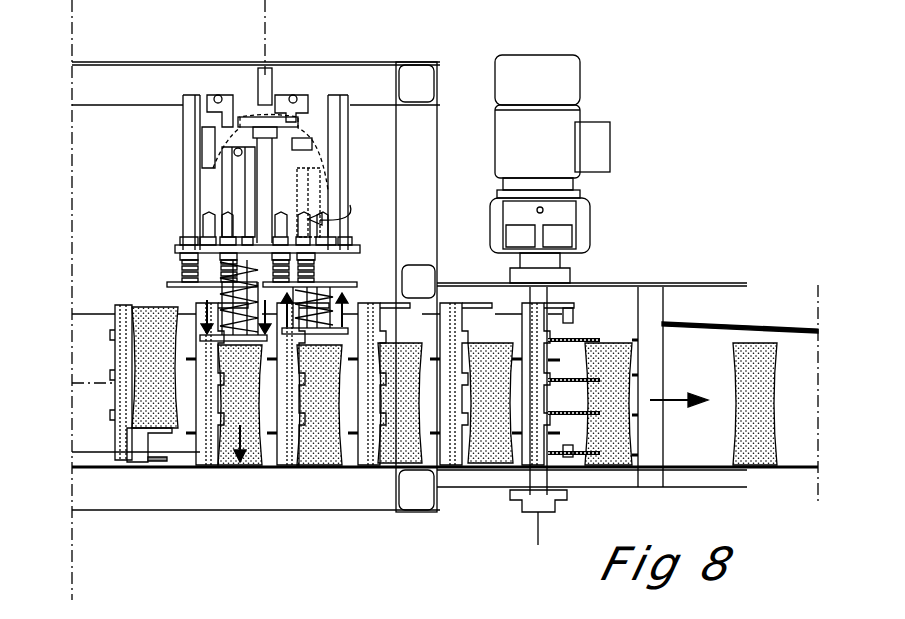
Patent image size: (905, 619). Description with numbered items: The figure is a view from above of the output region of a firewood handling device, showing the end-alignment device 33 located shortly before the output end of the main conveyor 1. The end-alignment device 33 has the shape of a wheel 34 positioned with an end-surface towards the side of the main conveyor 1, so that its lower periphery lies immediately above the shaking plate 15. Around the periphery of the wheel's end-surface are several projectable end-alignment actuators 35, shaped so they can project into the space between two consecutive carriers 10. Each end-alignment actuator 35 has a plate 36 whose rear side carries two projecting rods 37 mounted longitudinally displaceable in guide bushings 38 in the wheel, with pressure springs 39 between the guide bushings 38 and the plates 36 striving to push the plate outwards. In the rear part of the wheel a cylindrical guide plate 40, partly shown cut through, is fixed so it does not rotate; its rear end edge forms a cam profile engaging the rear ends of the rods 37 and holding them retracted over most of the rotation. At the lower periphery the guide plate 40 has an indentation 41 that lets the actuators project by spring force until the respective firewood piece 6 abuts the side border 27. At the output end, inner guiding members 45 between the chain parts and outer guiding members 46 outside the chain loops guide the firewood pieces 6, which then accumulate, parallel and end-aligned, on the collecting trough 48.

The main conveyor 1 is at (90, 505).
The firewood piece 6 is at (160, 413).
The carrier 10 is at (122, 440).
The shaking plate 15 is at (82, 337).
The side border 27 is at (205, 460).
The end-alignment device 33 is at (240, 181).
The wheel 34 is at (175, 252).
The end-alignment actuator 35 is at (350, 274).
The plate 36 is at (178, 295).
The projecting rod 37 is at (188, 173).
The guide bushing 38 is at (183, 243).
The pressure spring 39 is at (188, 270).
The cylindrical guide plate 40 is at (245, 108).
The indentation 41 is at (280, 148).
The inner guiding member 45 is at (463, 432).
The outer guiding member 46 is at (648, 380).
The collecting trough 48 is at (710, 338).